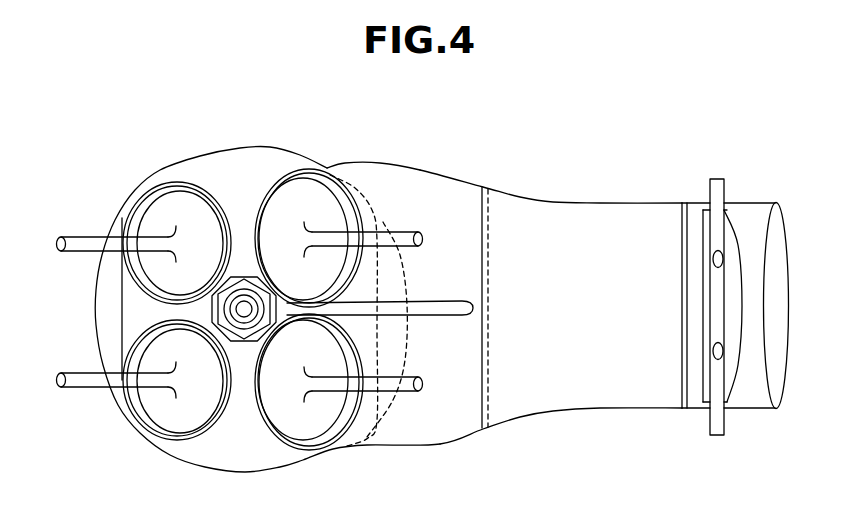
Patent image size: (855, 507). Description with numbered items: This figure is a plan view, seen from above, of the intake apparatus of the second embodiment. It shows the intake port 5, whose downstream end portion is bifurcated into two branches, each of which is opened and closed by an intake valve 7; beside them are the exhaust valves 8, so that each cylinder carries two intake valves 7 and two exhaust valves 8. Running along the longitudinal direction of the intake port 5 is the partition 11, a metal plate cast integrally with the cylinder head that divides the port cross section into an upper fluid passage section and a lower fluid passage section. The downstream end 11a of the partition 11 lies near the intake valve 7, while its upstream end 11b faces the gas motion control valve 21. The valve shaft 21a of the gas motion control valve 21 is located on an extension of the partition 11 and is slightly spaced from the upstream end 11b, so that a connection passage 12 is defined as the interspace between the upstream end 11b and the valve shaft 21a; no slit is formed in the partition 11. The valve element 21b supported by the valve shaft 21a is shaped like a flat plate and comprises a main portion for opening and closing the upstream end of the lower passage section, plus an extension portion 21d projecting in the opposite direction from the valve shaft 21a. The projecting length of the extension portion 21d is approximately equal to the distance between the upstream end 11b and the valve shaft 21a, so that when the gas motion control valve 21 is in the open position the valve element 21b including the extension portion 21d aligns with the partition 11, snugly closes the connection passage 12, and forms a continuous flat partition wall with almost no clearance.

The intake port 5 is at (467, 210).
The intake valve 7 is at (275, 223).
The exhaust valve 8 is at (163, 345).
The partition 11 is at (603, 227).
The downstream end of partition 11a is at (483, 412).
The upstream end of partition 11b is at (690, 212).
The connection passage 12 is at (697, 397).
The gas motion control valve 21 is at (752, 262).
The valve shaft 21a is at (717, 180).
The valve element 21b is at (731, 368).
The extension portion 21d is at (703, 284).